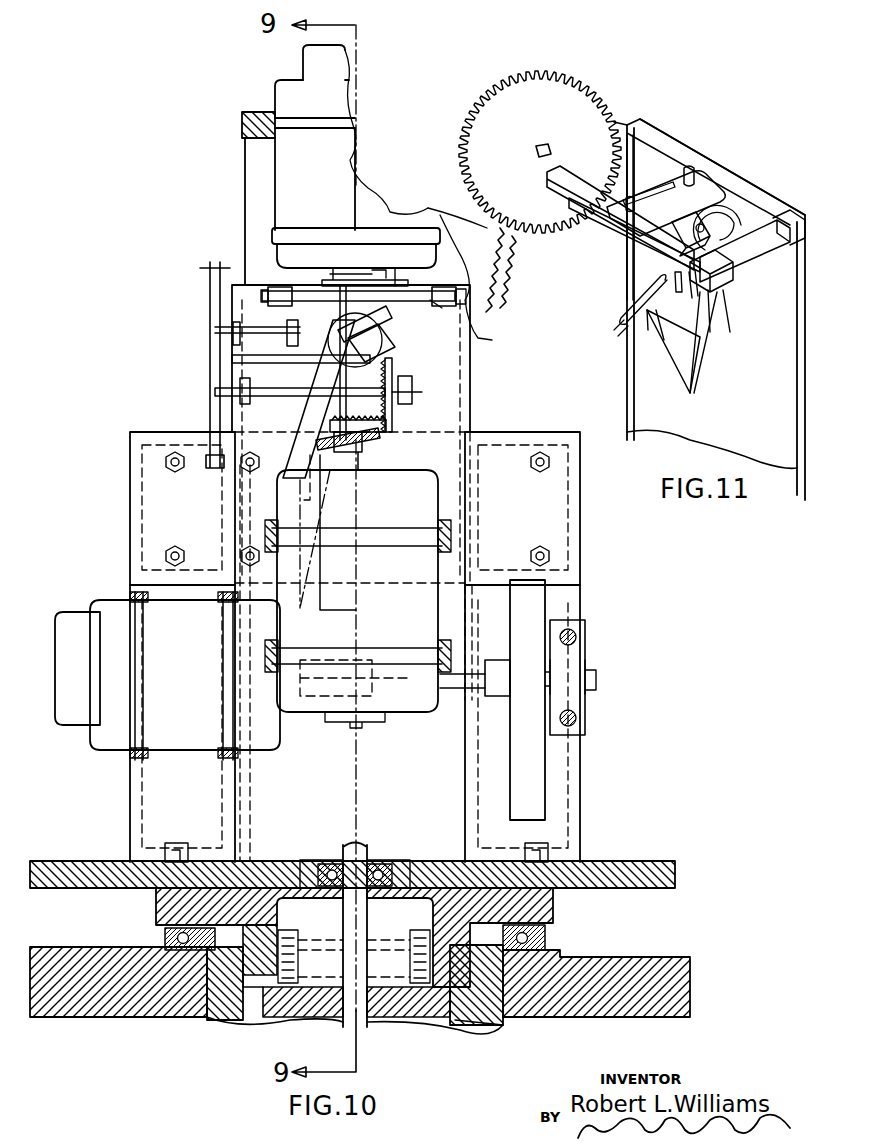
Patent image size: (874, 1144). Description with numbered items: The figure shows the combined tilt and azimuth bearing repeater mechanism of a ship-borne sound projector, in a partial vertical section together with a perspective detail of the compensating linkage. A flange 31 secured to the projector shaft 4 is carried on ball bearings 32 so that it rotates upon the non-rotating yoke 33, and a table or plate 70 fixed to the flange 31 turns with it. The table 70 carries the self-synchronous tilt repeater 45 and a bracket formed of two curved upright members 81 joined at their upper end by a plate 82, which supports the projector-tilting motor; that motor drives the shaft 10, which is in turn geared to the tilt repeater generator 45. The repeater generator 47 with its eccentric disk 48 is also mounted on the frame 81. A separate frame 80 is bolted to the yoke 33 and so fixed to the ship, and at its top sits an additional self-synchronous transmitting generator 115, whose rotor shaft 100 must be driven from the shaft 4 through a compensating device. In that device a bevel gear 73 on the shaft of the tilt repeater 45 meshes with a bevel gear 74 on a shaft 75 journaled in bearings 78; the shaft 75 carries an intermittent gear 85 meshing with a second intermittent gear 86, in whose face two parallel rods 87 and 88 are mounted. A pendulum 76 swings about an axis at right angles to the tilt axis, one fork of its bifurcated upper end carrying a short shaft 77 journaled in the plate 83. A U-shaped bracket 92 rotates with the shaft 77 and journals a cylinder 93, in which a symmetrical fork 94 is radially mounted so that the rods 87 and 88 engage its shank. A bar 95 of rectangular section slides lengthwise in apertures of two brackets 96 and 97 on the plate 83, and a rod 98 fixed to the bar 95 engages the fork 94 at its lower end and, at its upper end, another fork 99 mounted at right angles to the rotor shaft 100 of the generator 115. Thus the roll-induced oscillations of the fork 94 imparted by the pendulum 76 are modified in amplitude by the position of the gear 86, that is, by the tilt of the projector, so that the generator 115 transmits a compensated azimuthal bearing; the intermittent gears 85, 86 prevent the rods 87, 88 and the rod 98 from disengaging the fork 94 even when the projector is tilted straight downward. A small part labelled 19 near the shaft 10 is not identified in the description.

In FIG. 10, the projector shaft 4 is at (498, 1018).
In FIG. 10, the shaft 10 is at (367, 925).
In FIG. 10, the screw 19 is at (298, 932).
In FIG. 10, the flange 31 is at (545, 915).
In FIG. 10, the ball bearings 32 is at (530, 940).
In FIG. 10, the yoke 33 is at (612, 962).
In FIG. 10, the self-synchronous tilt repeater 45 is at (402, 502).
In FIG. 10, the repeater generator 47 is at (76, 700).
In FIG. 10, the eccentric disk 48 is at (525, 796).
In FIG. 10, the table 70 is at (655, 864).
In FIG. 10, the bevel gear 73 is at (332, 430).
In FIG. 10, the bevel gear 74 is at (394, 378).
In FIG. 10, the shaft 75 is at (413, 396).
In FIG. 10, the pendulum 76 is at (296, 448).
In FIG. 11, the pendulum 76 is at (692, 362).
In FIG. 10, the short shaft 77 is at (390, 336).
In FIG. 11, the short shaft 77 is at (716, 232).
In FIG. 10, the bearings 78 is at (292, 362).
In FIG. 10, the frame 80 is at (262, 163).
In FIG. 10, the curved upright members 81 is at (140, 784).
In FIG. 10, the plate 82 is at (160, 522).
In FIG. 10, the plate 83 is at (472, 364).
In FIG. 11, the plate 83 is at (760, 198).
In FIG. 10, the intermittent gear 85 is at (302, 432).
In FIG. 11, the intermittent gear 85 is at (520, 272).
In FIG. 10, the intermittent gear 86 is at (212, 292).
In FIG. 11, the intermittent gear 86 is at (570, 98).
In FIG. 10, the rod 87 is at (338, 364).
In FIG. 11, the rod 87 is at (694, 298).
In FIG. 10, the rod 88 is at (340, 352).
In FIG. 11, the rod 88 is at (676, 286).
In FIG. 10, the U-shaped bracket 92 is at (392, 340).
In FIG. 11, the U-shaped bracket 92 is at (730, 272).
In FIG. 10, the cylinder 93 is at (394, 322).
In FIG. 11, the cylinder 93 is at (714, 220).
In FIG. 10, the symmetrical fork 94 is at (384, 402).
In FIG. 11, the symmetrical fork 94 is at (642, 322).
In FIG. 10, the bar 95 is at (428, 303).
In FIG. 11, the bar 95 is at (722, 298).
In FIG. 10, the bracket 96 is at (458, 300).
In FIG. 11, the bracket 96 is at (755, 250).
In FIG. 10, the bracket 97 is at (272, 292).
In FIG. 11, the bracket 97 is at (666, 128).
In FIG. 10, the rod 98 is at (330, 300).
In FIG. 11, the rod 98 is at (628, 270).
In FIG. 10, the fork 99 is at (395, 284).
In FIG. 11, the fork 99 is at (653, 190).
In FIG. 10, the shaft 100 is at (378, 270).
In FIG. 11, the shaft 100 is at (690, 172).
In FIG. 10, the self-synchronous transmitting generator 115 is at (290, 104).